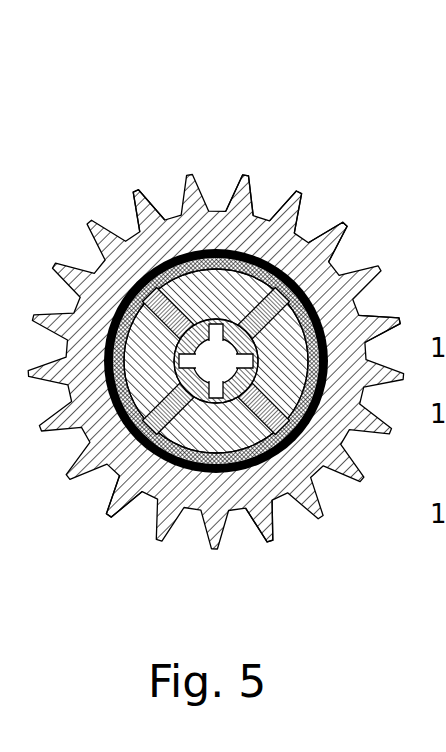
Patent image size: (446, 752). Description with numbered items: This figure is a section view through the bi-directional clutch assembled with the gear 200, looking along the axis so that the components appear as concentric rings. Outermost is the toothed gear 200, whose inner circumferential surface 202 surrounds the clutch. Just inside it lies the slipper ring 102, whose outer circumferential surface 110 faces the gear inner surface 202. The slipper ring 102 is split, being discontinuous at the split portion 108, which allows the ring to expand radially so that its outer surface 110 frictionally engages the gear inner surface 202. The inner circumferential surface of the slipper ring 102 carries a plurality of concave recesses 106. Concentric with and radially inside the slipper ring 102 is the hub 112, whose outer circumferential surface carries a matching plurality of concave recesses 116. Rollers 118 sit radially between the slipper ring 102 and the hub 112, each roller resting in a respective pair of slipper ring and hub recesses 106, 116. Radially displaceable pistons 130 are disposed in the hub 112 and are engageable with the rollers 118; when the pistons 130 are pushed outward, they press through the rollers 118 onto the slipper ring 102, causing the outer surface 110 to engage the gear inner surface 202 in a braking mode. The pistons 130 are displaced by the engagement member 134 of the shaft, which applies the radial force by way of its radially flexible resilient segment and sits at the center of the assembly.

The slipper ring 102 is at (310, 277).
The concave recesses 106 is at (295, 247).
The split portion 108 is at (217, 475).
The outer circumferential surface 110 is at (135, 243).
The hub 112 is at (278, 495).
The concave recesses 116 is at (320, 237).
The rollers 118 is at (340, 318).
The pistons 130 is at (116, 482).
The engagement member 134 is at (110, 300).
The gear 200 is at (247, 175).
The inner circumferential surface 202 is at (190, 255).